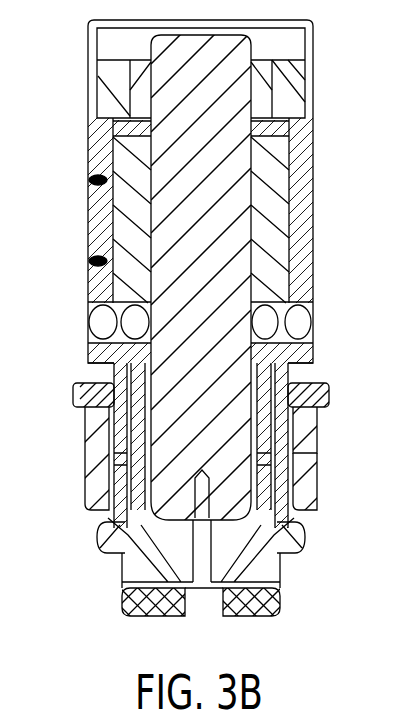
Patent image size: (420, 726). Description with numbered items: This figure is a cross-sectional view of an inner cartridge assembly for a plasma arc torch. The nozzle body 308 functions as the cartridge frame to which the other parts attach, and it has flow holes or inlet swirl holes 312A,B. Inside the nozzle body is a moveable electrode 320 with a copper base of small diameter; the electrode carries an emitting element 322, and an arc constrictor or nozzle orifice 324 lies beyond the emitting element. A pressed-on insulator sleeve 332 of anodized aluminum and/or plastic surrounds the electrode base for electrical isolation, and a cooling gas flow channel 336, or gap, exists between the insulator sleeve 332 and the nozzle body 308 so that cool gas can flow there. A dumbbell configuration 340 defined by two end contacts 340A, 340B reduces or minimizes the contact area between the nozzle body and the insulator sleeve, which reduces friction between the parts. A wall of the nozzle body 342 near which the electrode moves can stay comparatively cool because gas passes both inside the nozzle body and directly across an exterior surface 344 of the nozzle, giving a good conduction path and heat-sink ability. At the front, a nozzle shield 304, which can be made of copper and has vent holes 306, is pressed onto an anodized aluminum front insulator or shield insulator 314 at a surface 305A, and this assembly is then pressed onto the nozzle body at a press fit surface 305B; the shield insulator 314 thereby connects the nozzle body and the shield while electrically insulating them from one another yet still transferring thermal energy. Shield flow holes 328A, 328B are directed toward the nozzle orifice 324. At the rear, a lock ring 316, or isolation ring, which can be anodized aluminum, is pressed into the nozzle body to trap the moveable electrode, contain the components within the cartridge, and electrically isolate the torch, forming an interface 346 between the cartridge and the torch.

The shield 304 is at (285, 581).
The surface 305A is at (98, 528).
The press fit surface 305B is at (78, 406).
The vent holes 306 is at (93, 548).
The nozzle body 308 is at (308, 150).
The inlet swirl holes 312A,B is at (272, 312).
The shield insulator 314 is at (94, 468).
The lock ring 316 is at (308, 74).
The electrode 320 is at (176, 134).
The emitting element 322 is at (280, 455).
The nozzle orifice 324 is at (300, 506).
The shield flow hole 328A is at (100, 372).
The shield flow hole 328B is at (290, 375).
The insulator sleeve 332 is at (278, 200).
The cooling gas flow channel 336 is at (92, 179).
The dumbbell configuration 340 is at (130, 232).
The end contact 340A is at (126, 180).
The end contact 340B is at (115, 300).
The wall of the nozzle body 342 is at (300, 420).
The exterior surface 344 is at (286, 549).
The interface 346 is at (315, 42).